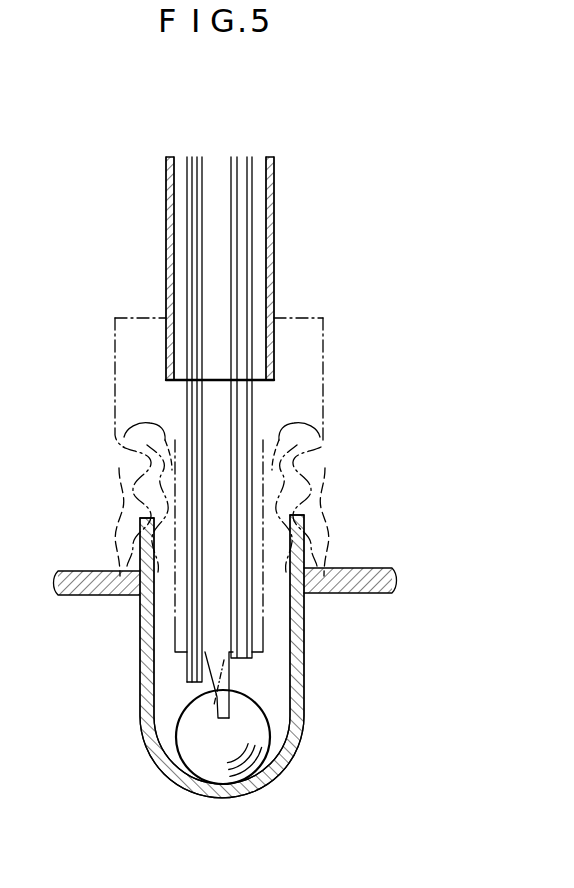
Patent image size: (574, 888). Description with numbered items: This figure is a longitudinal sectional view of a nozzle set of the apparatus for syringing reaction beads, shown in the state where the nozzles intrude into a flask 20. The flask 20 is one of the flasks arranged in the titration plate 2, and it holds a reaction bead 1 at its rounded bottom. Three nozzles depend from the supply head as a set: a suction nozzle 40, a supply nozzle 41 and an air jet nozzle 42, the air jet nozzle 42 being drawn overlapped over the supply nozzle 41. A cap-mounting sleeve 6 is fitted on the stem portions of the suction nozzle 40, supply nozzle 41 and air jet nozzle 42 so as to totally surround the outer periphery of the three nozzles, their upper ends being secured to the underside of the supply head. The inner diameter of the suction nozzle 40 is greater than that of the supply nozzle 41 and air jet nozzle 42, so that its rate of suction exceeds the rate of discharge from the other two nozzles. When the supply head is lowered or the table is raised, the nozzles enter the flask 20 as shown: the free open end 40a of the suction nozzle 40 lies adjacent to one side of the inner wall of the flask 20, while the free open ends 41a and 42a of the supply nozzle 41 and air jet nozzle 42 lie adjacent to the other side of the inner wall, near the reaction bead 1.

The reaction bead 1 is at (218, 768).
The titration plate 2 is at (358, 565).
The cap-mounting sleeve 6 is at (275, 199).
The flask 20 is at (292, 745).
The suction nozzle 40 is at (243, 402).
The free open end of suction nozzle 40a is at (243, 665).
The supply nozzle 41 is at (189, 399).
The free open end of supply nozzle 41a is at (200, 688).
The air jet nozzle 42 is at (198, 407).
The free open end of air jet nozzle 42a is at (193, 684).